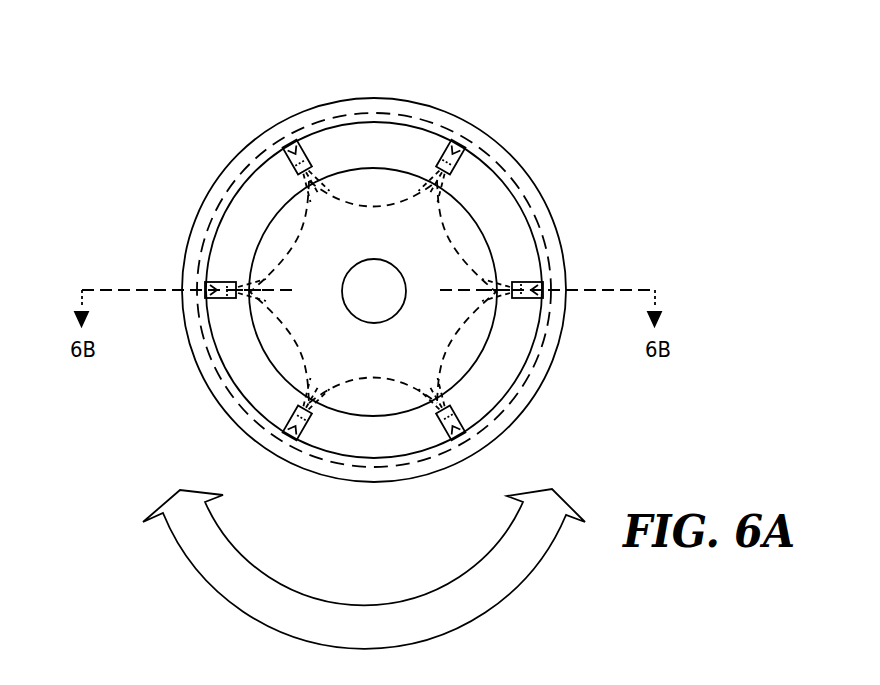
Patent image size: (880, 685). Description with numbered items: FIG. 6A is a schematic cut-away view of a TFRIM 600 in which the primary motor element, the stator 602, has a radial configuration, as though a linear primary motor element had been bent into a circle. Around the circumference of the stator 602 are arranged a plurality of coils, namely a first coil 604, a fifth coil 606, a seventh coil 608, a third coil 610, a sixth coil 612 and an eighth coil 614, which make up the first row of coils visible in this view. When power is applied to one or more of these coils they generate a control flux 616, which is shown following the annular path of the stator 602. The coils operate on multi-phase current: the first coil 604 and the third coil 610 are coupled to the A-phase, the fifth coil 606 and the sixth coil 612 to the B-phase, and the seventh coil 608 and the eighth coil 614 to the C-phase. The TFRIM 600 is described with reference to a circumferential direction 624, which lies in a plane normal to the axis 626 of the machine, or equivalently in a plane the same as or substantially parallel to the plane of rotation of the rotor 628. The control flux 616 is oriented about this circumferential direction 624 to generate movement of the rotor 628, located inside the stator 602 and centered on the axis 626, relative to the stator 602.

The TFRIM 600 is at (153, 66).
The stator 602 is at (557, 238).
The first coil 604 is at (220, 287).
The fifth coil 606 is at (287, 430).
The seventh coil 608 is at (463, 420).
The third coil 610 is at (527, 300).
The sixth coil 612 is at (457, 160).
The eighth coil 614 is at (293, 147).
The control flux 616 is at (347, 115).
The circumferential direction 624 is at (158, 508).
The axis 626 is at (394, 306).
The rotor 628 is at (431, 254).